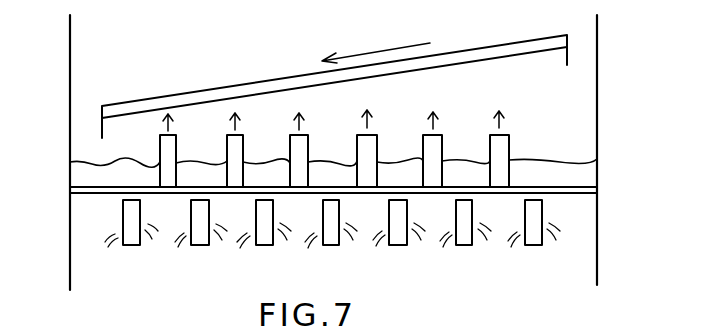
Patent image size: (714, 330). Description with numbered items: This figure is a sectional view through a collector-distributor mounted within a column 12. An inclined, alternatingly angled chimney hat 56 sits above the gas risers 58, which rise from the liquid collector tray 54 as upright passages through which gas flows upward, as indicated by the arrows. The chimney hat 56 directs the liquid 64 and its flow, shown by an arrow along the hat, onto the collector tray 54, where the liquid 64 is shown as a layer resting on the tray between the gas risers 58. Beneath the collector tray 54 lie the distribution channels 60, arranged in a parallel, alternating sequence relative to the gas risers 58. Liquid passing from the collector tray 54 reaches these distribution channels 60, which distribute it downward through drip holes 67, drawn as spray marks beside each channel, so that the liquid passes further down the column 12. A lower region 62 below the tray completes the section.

The column 12 is at (69, 74).
The liquid collector tray 54 is at (598, 186).
The chimney hats 56 is at (217, 90).
The gas risers 58 is at (226, 146).
The distribution channels 60 is at (140, 245).
The lower chamber 62 is at (310, 150).
The liquid 64 is at (80, 175).
The drip holes 67 is at (322, 226).